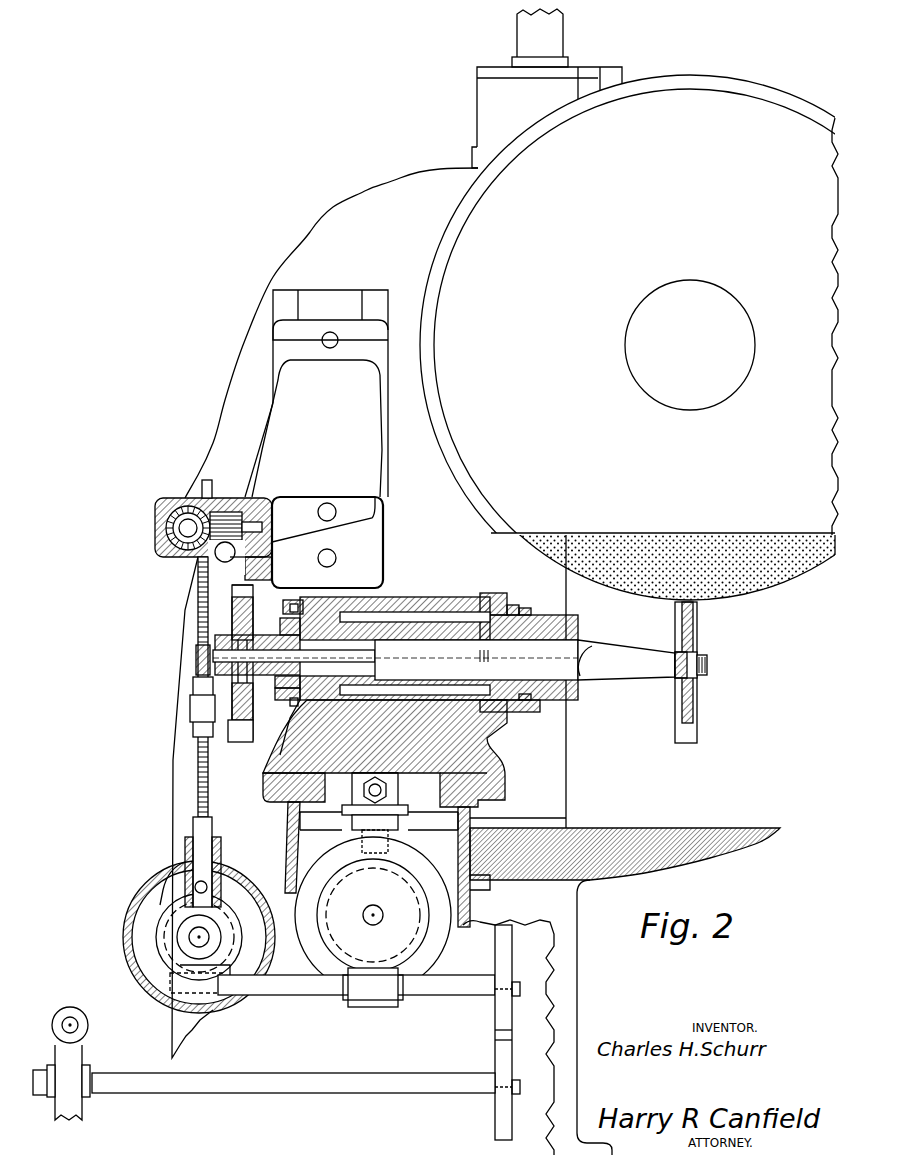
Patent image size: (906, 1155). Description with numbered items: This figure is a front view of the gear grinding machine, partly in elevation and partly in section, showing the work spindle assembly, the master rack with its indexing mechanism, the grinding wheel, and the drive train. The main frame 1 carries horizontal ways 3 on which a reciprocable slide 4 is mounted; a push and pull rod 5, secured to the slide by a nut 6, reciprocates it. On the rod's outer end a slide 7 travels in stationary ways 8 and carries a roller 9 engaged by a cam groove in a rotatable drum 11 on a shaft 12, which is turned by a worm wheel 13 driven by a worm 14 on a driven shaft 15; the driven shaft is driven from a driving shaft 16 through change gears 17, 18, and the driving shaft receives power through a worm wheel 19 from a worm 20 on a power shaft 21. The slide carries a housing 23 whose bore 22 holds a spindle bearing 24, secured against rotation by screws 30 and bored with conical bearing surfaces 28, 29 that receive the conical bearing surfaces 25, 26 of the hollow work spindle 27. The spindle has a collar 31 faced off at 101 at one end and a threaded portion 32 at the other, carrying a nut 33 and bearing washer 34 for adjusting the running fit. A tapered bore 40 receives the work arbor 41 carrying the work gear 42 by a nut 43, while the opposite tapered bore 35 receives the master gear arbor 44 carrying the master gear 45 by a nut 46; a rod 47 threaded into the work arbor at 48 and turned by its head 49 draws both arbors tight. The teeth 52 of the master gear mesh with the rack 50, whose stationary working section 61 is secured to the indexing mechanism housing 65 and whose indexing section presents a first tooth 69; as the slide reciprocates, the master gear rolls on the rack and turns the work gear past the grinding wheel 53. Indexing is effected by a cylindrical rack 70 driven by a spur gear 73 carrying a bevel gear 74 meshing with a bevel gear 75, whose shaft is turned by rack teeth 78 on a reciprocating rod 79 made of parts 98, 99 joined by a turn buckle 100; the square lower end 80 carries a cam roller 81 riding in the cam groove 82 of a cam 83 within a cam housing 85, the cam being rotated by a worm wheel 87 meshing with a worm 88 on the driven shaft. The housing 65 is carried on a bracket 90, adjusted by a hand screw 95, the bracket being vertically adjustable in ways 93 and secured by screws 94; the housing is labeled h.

The main frame 1 is at (577, 992).
The horizontal ways 3 is at (263, 780).
The reciprocable slide 4 is at (507, 742).
The push and pull rod 5 is at (386, 783).
The nut 6 is at (380, 790).
The slide 7 is at (342, 808).
The ways 8 is at (342, 818).
The roller 9 is at (330, 845).
The rotatable drum 11 is at (420, 870).
The shaft 12 is at (380, 910).
The worm wheel 13 is at (430, 948).
The worm 14 is at (385, 1007).
The driven shaft 15 is at (453, 995).
The driving shaft 16 is at (438, 1093).
The change gear 17 is at (495, 1058).
The change gear 18 is at (495, 1018).
The worm wheel 19 is at (82, 1056).
The worm 20 is at (88, 1026).
The power shaft 21 is at (72, 1022).
The bore 22 is at (490, 593).
The housing 23 is at (440, 597).
The spindle bearing 24 is at (530, 610).
The conical bearing surface 25 is at (531, 612).
The conical bearing surface 26 is at (286, 605).
The work spindle 27 is at (578, 630).
The conical bearing surface 28 is at (513, 605).
The conical bearing surface 29 is at (395, 597).
The screws 30 is at (290, 608).
The flange or collar 31 is at (545, 700).
The threaded portion 32 is at (279, 624).
The nut 33 is at (279, 690).
The bearing washer 34 is at (280, 704).
The tapered bore 35 is at (292, 712).
The tapered bore 40 is at (588, 652).
The work arbor 41 is at (598, 672).
The work gear 42 is at (697, 628).
The nut 43 is at (707, 660).
The master gear arbor 44 is at (232, 612).
The master gear 45 is at (232, 598).
The nut 46 is at (215, 640).
The rod 47 is at (193, 705).
The threaded connection 48 is at (478, 650).
The head 49 is at (198, 655).
The rack 50 is at (200, 596).
The teeth 52 is at (238, 742).
The grinding wheel 53 is at (775, 577).
The working section 61 is at (205, 582).
The indexing mechanism housing 65 is at (156, 543).
The first tooth 69 is at (160, 585).
The cylindrical rack 70 is at (215, 560).
The spur gear 73 is at (207, 480).
The bevel gear 74 is at (212, 512).
The bevel gear 75 is at (178, 510).
The rack teeth 78 is at (222, 512).
The reciprocating rod 79 is at (198, 790).
The lower end 80 is at (193, 828).
The cam roller 81 is at (195, 885).
The cam groove 82 is at (150, 918).
The cam 83 is at (156, 932).
The cam housing 85 is at (185, 846).
The worm wheel 87 is at (150, 948).
The worm 88 is at (220, 1012).
The bracket 90 is at (283, 336).
The ways 93 is at (375, 305).
The screws 94 is at (322, 338).
The hand screw 95 is at (336, 512).
The rod part 98 is at (196, 668).
The rod part 99 is at (198, 752).
The turn buckle 100 is at (192, 715).
The faced-off surface 101 is at (531, 706).
The motor housing h is at (312, 233).